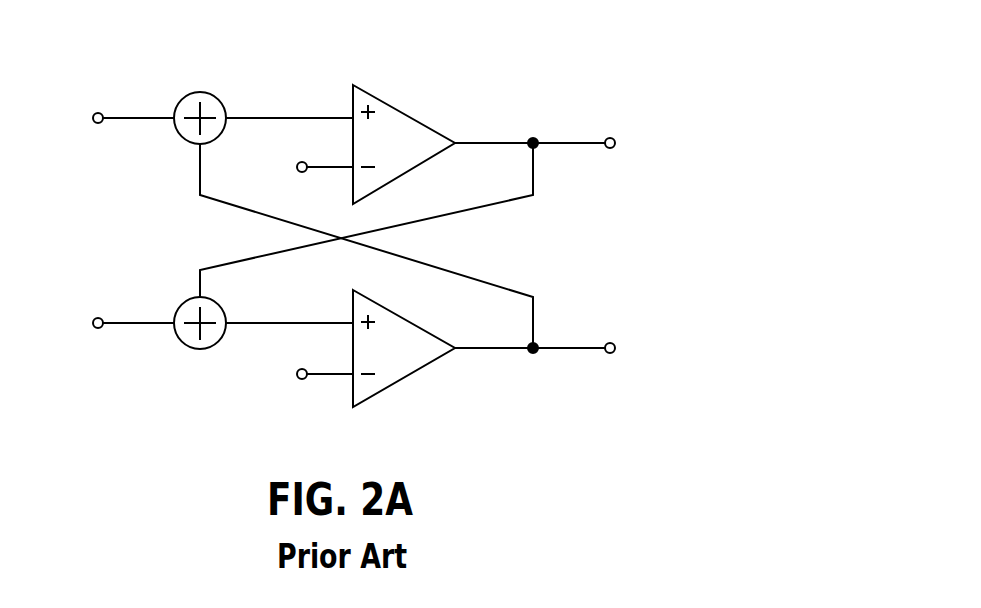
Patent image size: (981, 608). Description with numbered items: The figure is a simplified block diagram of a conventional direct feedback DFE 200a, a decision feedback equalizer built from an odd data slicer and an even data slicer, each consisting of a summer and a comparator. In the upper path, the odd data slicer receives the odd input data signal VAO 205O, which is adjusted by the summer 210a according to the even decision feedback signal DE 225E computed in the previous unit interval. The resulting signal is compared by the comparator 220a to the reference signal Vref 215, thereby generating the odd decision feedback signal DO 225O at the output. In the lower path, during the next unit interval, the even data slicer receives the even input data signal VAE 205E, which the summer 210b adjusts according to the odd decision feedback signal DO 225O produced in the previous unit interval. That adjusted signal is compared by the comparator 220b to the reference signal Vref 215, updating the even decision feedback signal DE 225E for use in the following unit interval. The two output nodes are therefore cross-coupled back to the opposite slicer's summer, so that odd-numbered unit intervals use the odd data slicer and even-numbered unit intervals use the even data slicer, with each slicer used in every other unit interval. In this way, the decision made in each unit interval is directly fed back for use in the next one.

The conventional direct feedback DFE 200a is at (557, 51).
The odd input data signal VAO 205O is at (85, 141).
The even input data signal VAE 205E is at (85, 345).
The summer 210a is at (196, 93).
The summer 210b is at (196, 348).
The reference signal Vref 215 is at (290, 190).
The comparator 220a is at (398, 104).
The comparator 220b is at (398, 383).
The odd decision feedback signal DO 225O is at (672, 166).
The even decision feedback signal DE 225E is at (672, 371).